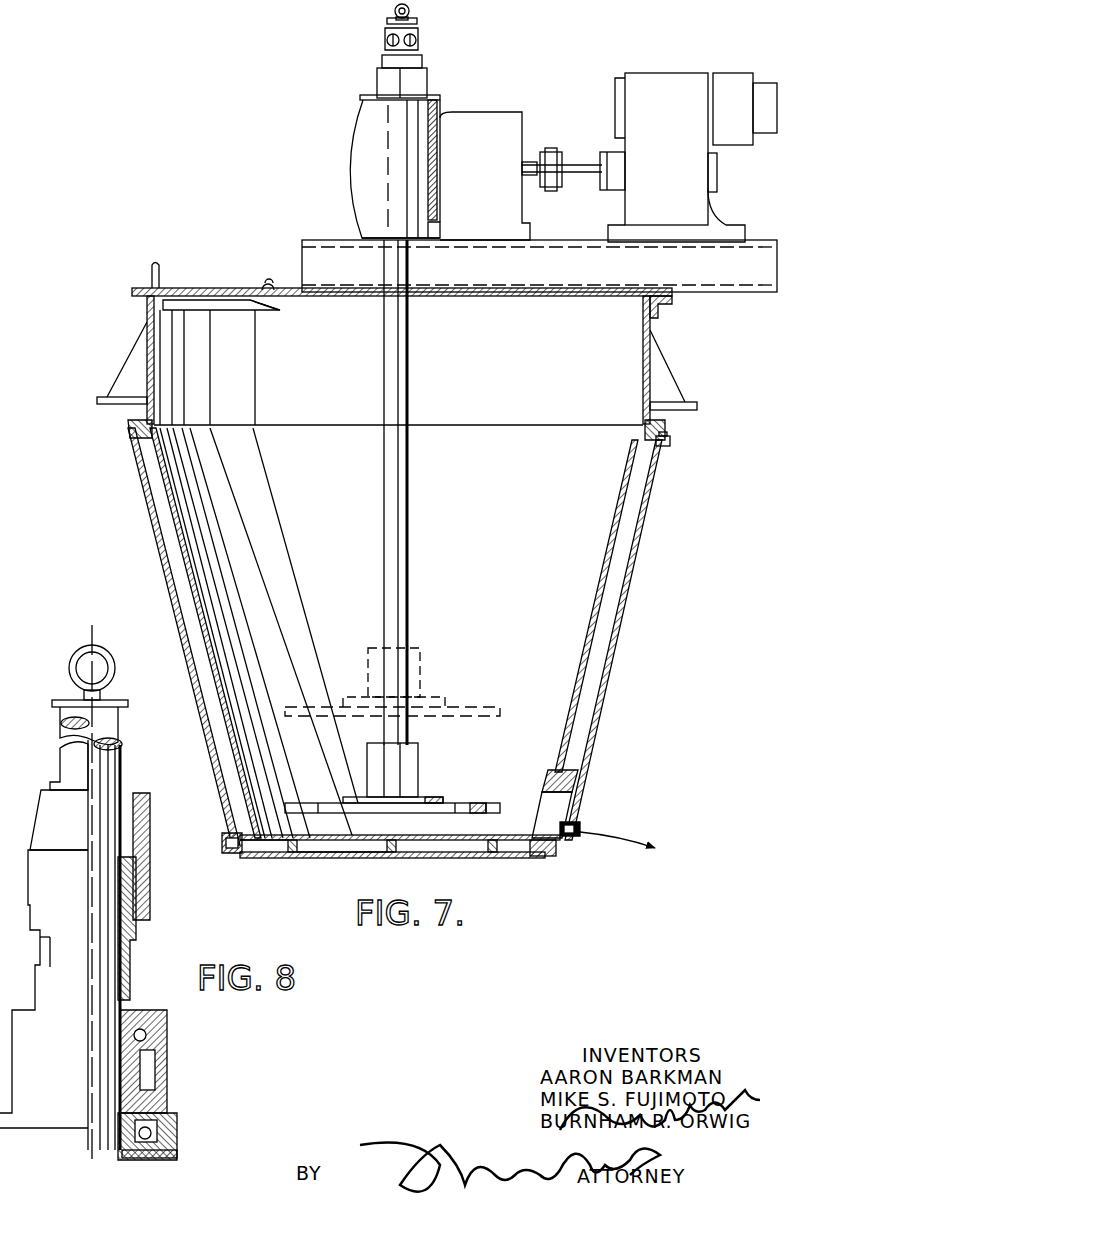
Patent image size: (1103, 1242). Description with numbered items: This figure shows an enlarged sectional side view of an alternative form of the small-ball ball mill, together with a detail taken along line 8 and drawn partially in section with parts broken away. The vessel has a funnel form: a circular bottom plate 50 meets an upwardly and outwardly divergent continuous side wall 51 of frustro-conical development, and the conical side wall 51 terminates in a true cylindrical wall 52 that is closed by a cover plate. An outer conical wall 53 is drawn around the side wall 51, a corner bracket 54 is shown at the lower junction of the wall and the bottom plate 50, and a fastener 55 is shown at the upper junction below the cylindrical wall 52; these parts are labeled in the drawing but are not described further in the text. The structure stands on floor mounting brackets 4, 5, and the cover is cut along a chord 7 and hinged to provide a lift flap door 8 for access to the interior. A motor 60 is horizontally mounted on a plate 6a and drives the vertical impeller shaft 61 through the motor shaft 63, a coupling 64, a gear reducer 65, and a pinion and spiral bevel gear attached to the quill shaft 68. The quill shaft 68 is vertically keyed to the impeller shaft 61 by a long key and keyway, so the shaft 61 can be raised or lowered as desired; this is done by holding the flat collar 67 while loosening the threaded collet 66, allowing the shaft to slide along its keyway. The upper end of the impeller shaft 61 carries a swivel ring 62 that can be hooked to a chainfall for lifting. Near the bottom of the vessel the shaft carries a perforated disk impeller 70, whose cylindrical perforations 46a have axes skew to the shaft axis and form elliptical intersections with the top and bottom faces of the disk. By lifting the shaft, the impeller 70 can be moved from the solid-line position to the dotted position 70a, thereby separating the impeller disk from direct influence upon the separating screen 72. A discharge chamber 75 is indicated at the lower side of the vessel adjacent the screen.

In FIG. 7, the floor mounting bracket 4 is at (684, 396).
In FIG. 7, the floor mounting bracket 5 is at (100, 397).
In FIG. 7, the plate 6a is at (290, 286).
In FIG. 7, the chord 7 is at (157, 262).
In FIG. 7, the lift flap door 8 is at (412, 12).
In FIG. 7, the cylindrical perforations 46a is at (324, 802).
In FIG. 7, the circular bottom plate 50 is at (440, 836).
In FIG. 7, the continuous side wall 51 is at (212, 660).
In FIG. 7, the cylindrical wall 52 is at (155, 364).
In FIG. 7, the conical hopper wall 53 is at (152, 522).
In FIG. 7, the corner bracket 54 is at (222, 840).
In FIG. 7, the fastening bolt 55 is at (670, 441).
In FIG. 7, the motor 60 is at (648, 73).
In FIG. 7, the impeller shaft 61 is at (410, 560).
In FIG. 8, the impeller shaft 61 is at (90, 1150).
In FIG. 7, the swivel ring 62 is at (392, 12).
In FIG. 8, the swivel ring 62 is at (92, 650).
In FIG. 7, the motor shaft 63 is at (568, 164).
In FIG. 7, the coupling 64 is at (550, 152).
In FIG. 7, the gear reducer 65 is at (490, 118).
In FIG. 7, the threaded collet 66 is at (418, 39).
In FIG. 8, the threaded collet 66 is at (150, 893).
In FIG. 7, the flat collar 67 is at (426, 66).
In FIG. 8, the flat collar 67 is at (128, 950).
In FIG. 8, the quill shaft 68 is at (124, 1160).
In FIG. 7, the perforated disk impeller 70 is at (448, 797).
In FIG. 7, the dotted position 70a is at (460, 706).
In FIG. 7, the separating screen 72 is at (542, 790).
In FIG. 7, the discharge chamber 75 is at (580, 825).